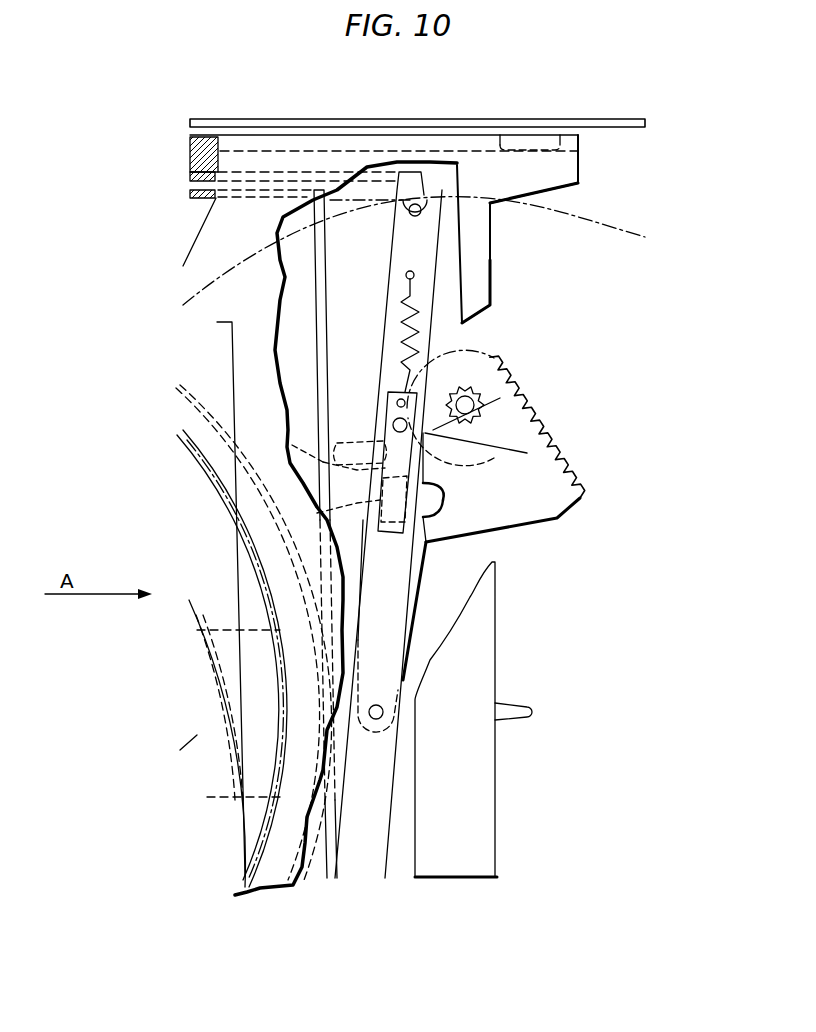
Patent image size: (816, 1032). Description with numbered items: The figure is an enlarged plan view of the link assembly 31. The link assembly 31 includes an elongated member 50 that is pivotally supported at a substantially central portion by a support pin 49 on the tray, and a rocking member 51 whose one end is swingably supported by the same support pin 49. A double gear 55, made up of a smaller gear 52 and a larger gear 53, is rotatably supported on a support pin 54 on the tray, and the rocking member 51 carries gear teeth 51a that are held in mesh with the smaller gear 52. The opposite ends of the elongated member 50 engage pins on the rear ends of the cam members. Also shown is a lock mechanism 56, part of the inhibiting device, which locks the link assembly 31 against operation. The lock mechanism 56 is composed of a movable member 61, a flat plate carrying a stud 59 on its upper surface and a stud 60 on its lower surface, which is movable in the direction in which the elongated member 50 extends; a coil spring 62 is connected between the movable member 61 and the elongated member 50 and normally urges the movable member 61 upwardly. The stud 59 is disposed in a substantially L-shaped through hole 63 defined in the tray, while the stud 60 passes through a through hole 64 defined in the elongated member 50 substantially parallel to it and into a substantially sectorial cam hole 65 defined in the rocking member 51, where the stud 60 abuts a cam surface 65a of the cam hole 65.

The link assembly 31 is at (615, 295).
The support pin 49 is at (376, 720).
The elongated member 50 is at (428, 293).
The rocking member 51 is at (500, 518).
The gear teeth 51a is at (553, 469).
The smaller gear 52 is at (481, 392).
The larger gear 53 is at (503, 397).
The support pin 54 is at (466, 400).
The double gear 55 is at (538, 410).
The lock mechanism 56 is at (338, 434).
The stud 59 is at (396, 425).
The stud 60 is at (292, 445).
The movable member 61 is at (387, 405).
The coil spring 62 is at (396, 330).
The L-shaped through hole 63 is at (361, 432).
The through hole 64 is at (320, 513).
The cam hole 65 is at (433, 509).
The cam surface 65a is at (444, 498).